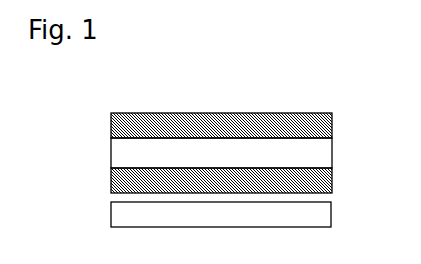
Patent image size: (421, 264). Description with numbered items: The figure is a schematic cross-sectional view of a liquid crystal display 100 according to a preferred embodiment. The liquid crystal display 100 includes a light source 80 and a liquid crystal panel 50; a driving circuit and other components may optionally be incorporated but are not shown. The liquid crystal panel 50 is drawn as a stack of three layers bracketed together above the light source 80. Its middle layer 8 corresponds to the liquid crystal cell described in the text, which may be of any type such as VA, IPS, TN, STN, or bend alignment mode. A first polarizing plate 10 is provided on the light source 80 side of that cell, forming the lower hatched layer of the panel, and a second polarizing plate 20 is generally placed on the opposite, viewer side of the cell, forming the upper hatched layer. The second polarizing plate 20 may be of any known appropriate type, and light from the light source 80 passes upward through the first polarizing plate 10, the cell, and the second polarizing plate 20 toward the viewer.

The liquid crystal display 100 is at (212, 106).
The liquid crystal panel 50 is at (105, 113).
The second polarizing plate 20 is at (332, 129).
The polarizer layer 8 is at (318, 155).
The first polarizing plate 10 is at (332, 182).
The light source 80 is at (318, 215).